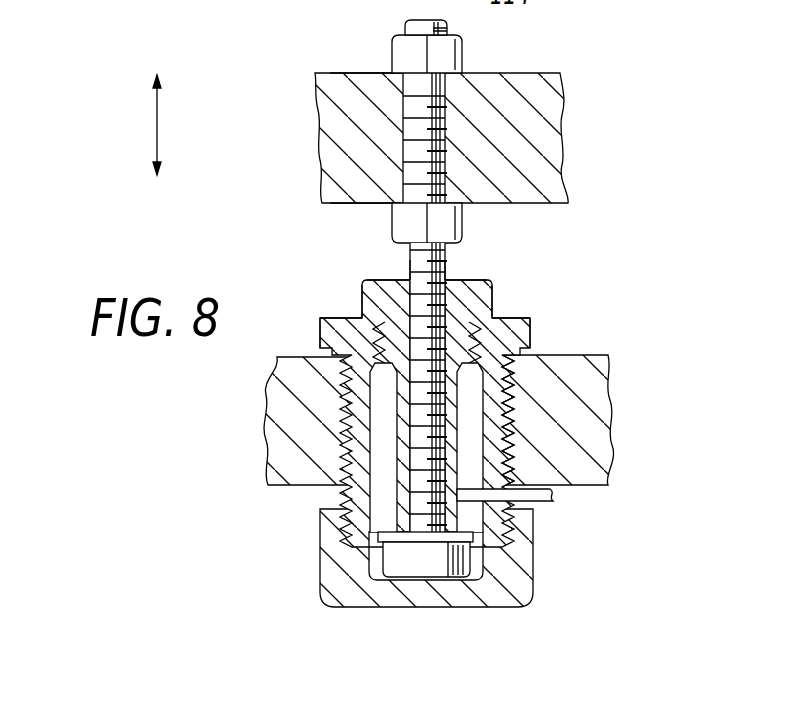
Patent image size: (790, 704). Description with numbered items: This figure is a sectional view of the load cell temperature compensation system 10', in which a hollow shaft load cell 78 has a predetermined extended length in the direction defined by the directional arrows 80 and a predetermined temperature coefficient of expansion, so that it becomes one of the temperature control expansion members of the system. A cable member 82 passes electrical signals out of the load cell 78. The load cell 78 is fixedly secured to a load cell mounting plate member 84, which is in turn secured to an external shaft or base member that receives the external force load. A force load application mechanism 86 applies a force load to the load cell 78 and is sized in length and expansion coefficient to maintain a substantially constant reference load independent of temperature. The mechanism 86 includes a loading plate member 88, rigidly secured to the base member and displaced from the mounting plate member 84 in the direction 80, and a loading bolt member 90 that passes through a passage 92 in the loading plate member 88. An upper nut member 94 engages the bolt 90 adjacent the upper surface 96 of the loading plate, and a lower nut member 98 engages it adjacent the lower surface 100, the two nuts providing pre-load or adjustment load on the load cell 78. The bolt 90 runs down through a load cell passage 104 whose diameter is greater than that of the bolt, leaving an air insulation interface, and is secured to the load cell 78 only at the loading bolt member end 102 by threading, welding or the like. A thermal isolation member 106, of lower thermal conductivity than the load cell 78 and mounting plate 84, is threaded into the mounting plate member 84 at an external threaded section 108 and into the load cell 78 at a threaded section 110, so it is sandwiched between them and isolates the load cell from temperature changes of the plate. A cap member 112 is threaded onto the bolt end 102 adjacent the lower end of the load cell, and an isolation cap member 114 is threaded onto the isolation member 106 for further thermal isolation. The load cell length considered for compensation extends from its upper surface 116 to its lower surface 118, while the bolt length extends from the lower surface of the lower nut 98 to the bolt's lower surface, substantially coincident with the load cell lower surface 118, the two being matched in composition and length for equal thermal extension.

The load cell temperature compensation system 10' is at (664, 234).
The hollow shaft load cell 78 is at (492, 301).
The directional arrows 80 is at (157, 132).
The cable member 82 is at (554, 500).
The load cell mounting plate member 84 is at (602, 454).
The force load application mechanism 86 is at (390, 253).
The loading plate member 88 is at (553, 142).
The loading bolt member 90 is at (405, 27).
The passage 92 is at (400, 128).
The upper nut member 94 is at (460, 53).
The upper surface 96 is at (360, 73).
The lower nut member 98 is at (463, 222).
The lower surface 100 is at (353, 204).
The loading bolt member end 102 is at (407, 500).
The load cell passage 104 is at (404, 279).
The thermal isolation member 106 is at (531, 333).
The external threaded section 108 is at (505, 408).
The threaded section 110 is at (368, 312).
The cap member 112 is at (463, 575).
The isolation cap member 114 is at (523, 575).
The upper surface 116 is at (470, 280).
The lower surface 118 is at (400, 534).